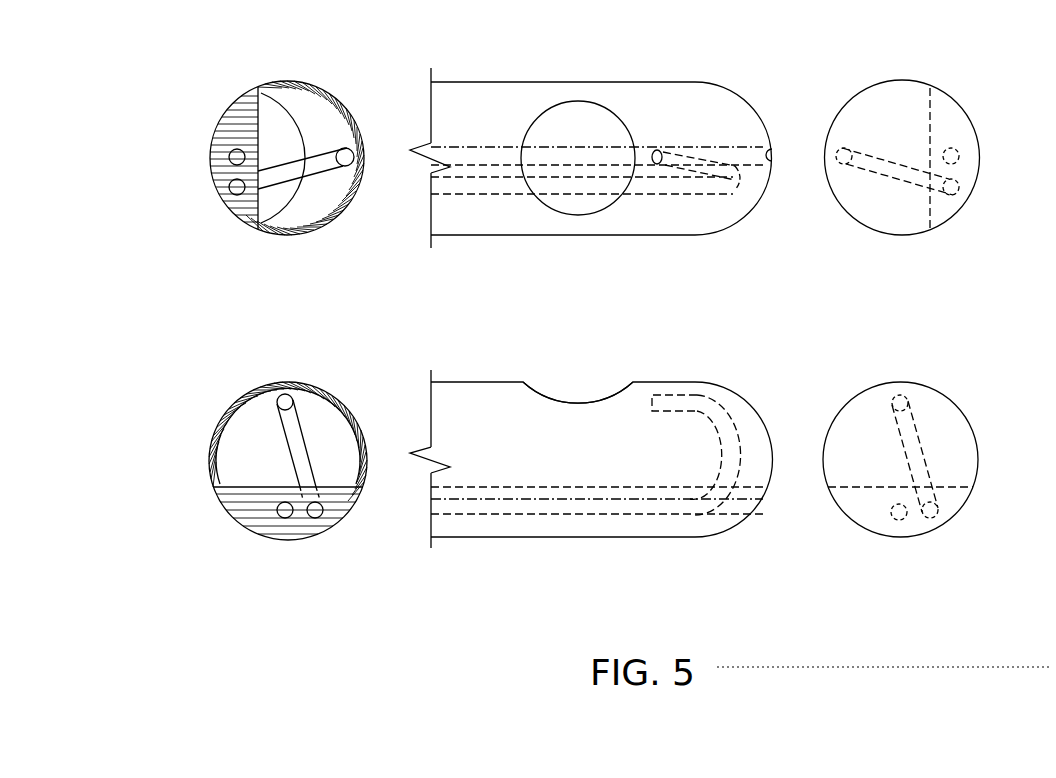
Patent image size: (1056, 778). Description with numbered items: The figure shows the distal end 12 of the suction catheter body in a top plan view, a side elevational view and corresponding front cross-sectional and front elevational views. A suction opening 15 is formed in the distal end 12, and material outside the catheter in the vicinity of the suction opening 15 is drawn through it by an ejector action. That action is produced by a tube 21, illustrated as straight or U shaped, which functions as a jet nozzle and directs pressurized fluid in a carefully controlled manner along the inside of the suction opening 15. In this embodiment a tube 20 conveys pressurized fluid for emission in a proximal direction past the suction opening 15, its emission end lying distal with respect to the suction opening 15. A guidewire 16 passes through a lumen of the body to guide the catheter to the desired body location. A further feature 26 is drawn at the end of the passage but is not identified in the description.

The distal end 12 is at (759, 232).
The suction opening 15 is at (648, 121).
The guidewire 16 is at (275, 130).
The tube 20 is at (671, 126).
The tube 21 is at (303, 191).
The passage end 26 is at (754, 185).